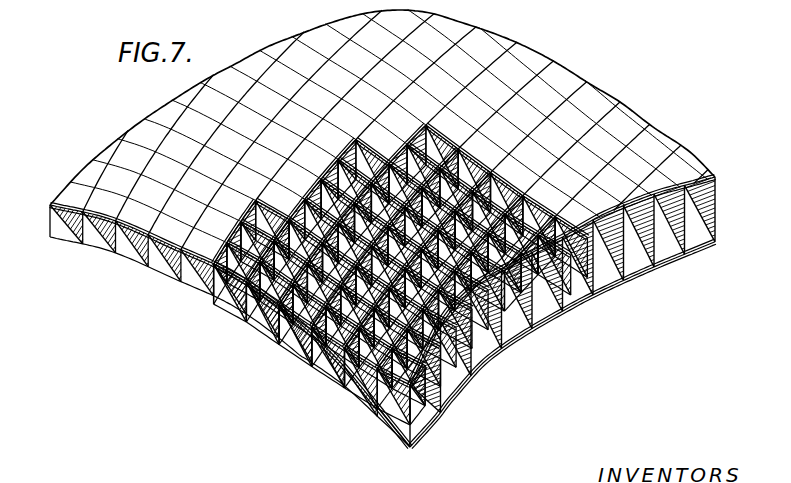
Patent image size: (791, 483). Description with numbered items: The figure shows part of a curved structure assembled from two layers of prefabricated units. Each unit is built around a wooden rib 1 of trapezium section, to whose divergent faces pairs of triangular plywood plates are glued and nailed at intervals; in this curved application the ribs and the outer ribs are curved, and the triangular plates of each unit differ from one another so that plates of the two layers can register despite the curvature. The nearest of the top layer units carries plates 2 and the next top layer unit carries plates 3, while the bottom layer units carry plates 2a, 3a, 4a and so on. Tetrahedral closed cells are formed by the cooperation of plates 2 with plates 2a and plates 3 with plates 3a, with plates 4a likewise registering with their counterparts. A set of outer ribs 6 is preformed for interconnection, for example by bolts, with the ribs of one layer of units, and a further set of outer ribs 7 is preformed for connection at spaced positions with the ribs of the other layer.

The wooden rib 1 is at (382, 338).
The plates 2 is at (562, 314).
The plates 2a is at (532, 323).
The plates 3 is at (384, 274).
The plates 3a is at (401, 287).
The plates 4a is at (400, 274).
The outer ribs 6 is at (305, 326).
The outer ribs 7 is at (382, 197).